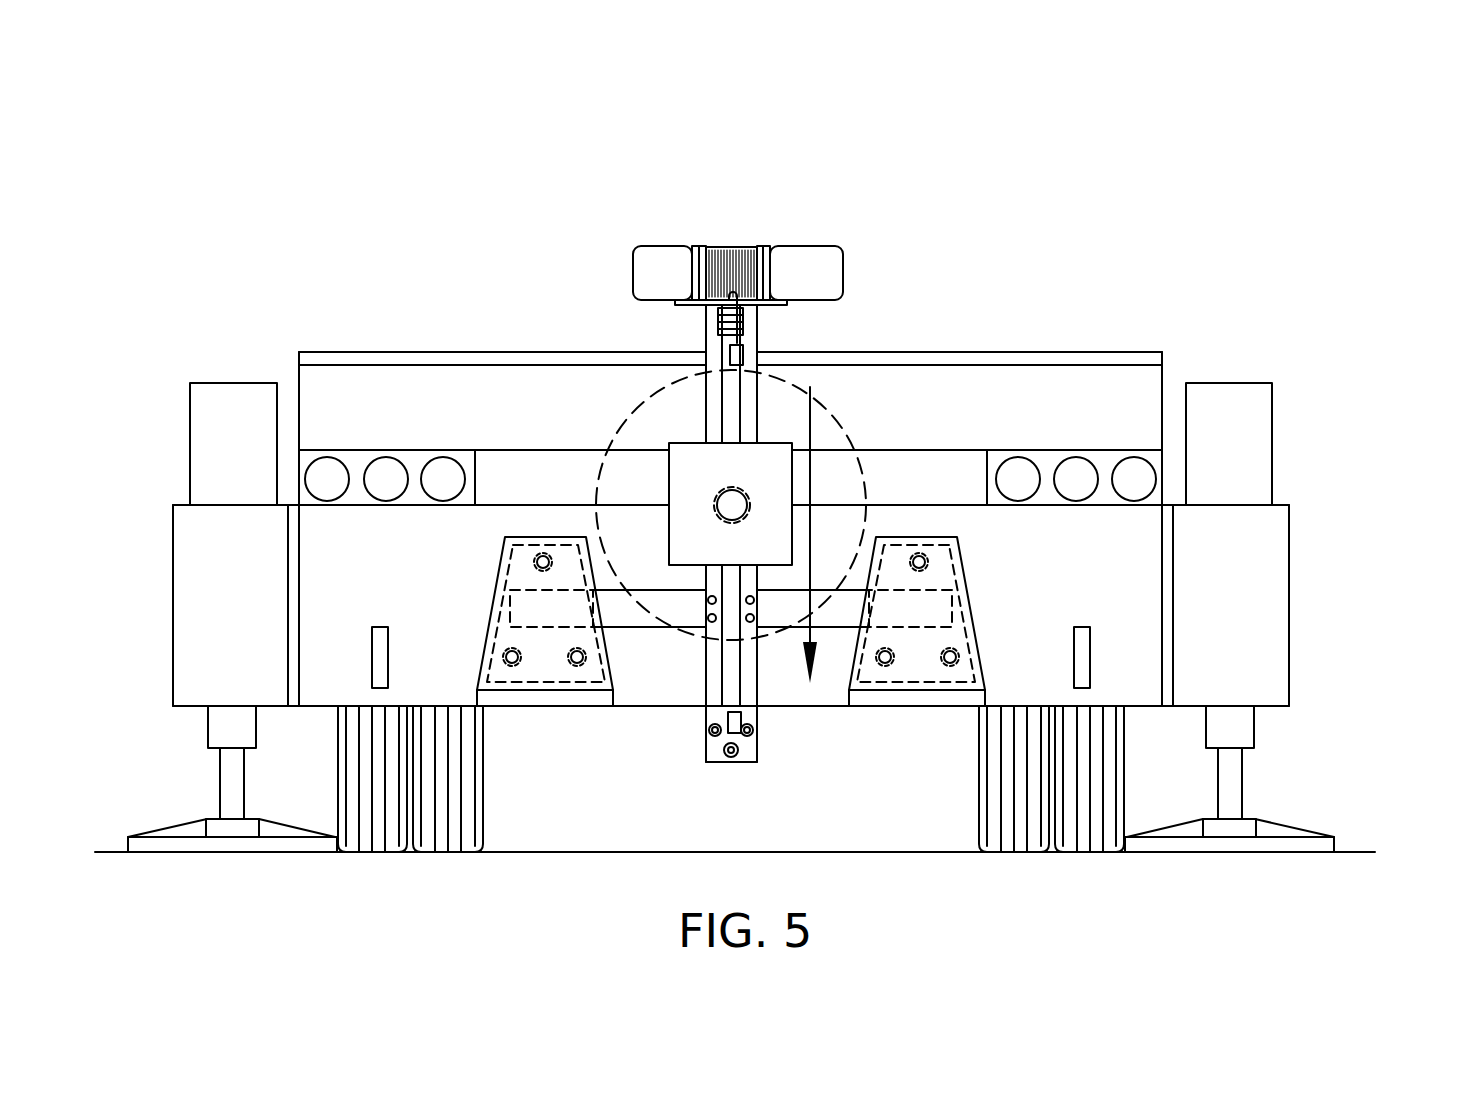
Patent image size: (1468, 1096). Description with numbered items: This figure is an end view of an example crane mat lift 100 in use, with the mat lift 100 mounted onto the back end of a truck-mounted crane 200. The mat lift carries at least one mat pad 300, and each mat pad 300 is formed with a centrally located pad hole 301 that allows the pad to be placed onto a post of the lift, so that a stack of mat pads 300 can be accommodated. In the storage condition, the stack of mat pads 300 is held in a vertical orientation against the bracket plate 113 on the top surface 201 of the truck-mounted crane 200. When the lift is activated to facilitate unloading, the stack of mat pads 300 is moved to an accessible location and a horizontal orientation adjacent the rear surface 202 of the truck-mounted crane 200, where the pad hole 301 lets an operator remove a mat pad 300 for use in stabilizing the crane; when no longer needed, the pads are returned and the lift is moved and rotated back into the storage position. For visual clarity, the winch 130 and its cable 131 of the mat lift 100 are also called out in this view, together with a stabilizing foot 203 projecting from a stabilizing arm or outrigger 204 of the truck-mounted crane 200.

The crane mat lift 100 is at (867, 118).
The bracket plate 113 is at (793, 470).
The winch 130 is at (697, 250).
The cable 131 is at (723, 392).
The truck-mounted crane 200 is at (338, 392).
The top surface 201 is at (955, 352).
The rear surface 202 is at (672, 667).
The stabilizing foot 203 is at (1306, 811).
The stabilizing arm or outrigger 204 is at (1308, 591).
The mat pad 300 is at (600, 482).
The pad hole 301 is at (735, 522).